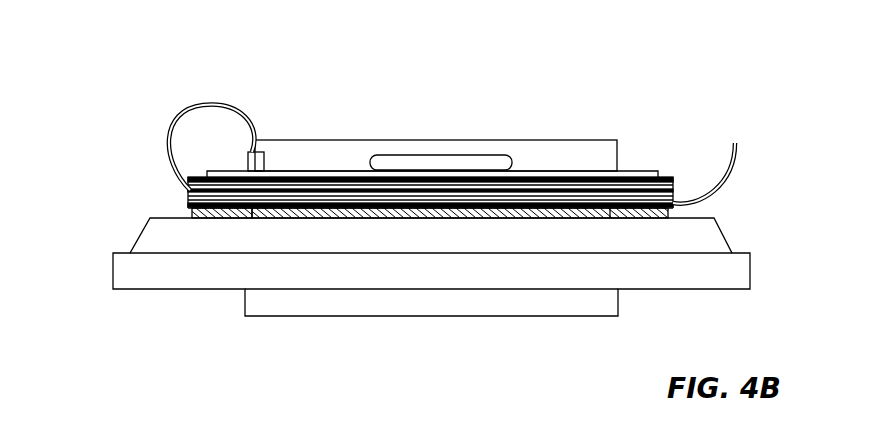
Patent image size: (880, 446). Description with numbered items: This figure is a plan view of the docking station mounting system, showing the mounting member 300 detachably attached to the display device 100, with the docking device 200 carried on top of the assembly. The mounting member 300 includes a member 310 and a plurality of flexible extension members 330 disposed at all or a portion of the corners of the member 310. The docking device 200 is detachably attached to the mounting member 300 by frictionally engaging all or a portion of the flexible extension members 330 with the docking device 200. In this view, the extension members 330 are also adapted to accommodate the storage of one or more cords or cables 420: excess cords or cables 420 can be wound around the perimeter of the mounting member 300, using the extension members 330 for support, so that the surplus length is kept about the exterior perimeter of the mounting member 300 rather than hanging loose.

The display device 100 is at (150, 215).
The docking device 200 is at (548, 173).
The mounting member 300 is at (667, 177).
The member 310 is at (330, 215).
The extension members 330 is at (220, 216).
The cords or cables 420 is at (185, 188).